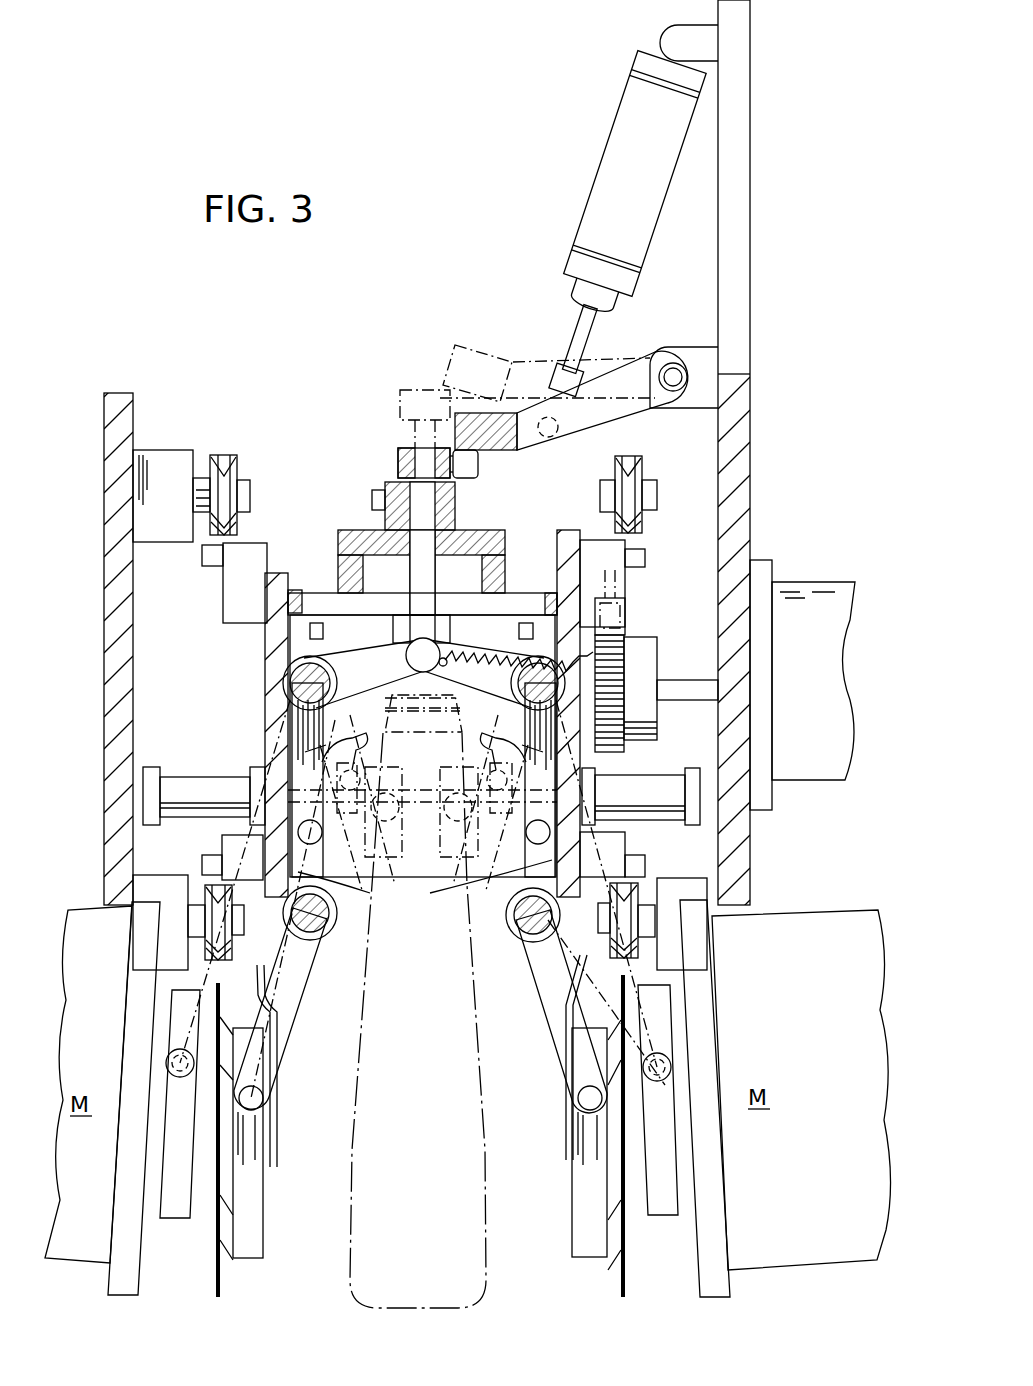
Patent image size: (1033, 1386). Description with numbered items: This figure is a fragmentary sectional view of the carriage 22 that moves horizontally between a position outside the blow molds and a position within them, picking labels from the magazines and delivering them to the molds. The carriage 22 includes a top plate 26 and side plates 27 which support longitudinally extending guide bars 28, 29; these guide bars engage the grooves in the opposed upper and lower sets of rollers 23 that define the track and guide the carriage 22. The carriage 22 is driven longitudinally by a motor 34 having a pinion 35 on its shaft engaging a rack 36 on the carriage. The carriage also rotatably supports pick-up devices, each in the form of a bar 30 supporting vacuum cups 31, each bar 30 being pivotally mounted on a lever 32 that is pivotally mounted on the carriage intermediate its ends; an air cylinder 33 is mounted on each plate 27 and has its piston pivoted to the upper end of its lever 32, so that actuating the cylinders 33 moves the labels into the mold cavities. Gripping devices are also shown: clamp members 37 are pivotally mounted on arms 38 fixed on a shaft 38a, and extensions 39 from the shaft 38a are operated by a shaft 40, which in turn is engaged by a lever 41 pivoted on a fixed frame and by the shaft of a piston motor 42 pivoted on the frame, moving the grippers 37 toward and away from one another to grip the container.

The carriage 22 is at (312, 572).
The rollers 23 is at (232, 458).
The top plate 26 is at (500, 630).
The side plates 27 is at (282, 580).
The guide bar 28 is at (212, 568).
The guide bar 29 is at (218, 858).
The bar 30 is at (253, 1180).
The vacuum cups 31 is at (235, 1056).
The lever 32 is at (272, 1058).
The air cylinder 33 is at (212, 804).
The motor 34 is at (811, 682).
The pinion 35 is at (614, 668).
The rack 36 is at (624, 612).
The clamp members 37 is at (422, 1011).
The arms 38 is at (330, 748).
The shaft 38a is at (340, 700).
The extensions 39 is at (383, 680).
The shaft 40 is at (398, 470).
The lever 41 is at (578, 418).
The piston motor 42 is at (640, 187).